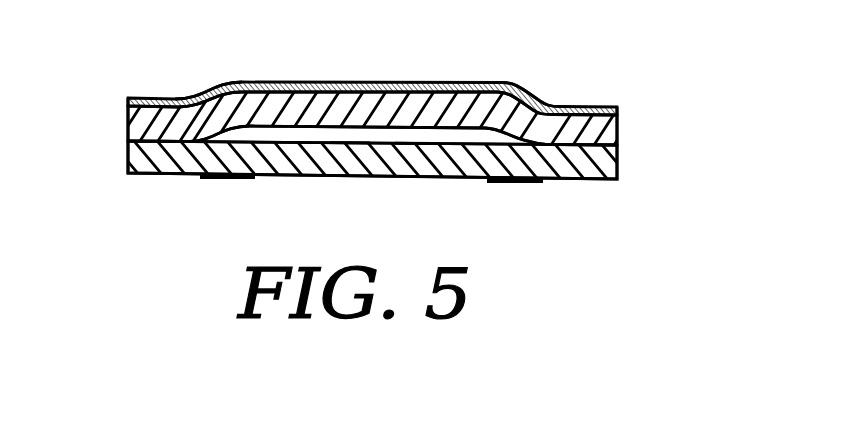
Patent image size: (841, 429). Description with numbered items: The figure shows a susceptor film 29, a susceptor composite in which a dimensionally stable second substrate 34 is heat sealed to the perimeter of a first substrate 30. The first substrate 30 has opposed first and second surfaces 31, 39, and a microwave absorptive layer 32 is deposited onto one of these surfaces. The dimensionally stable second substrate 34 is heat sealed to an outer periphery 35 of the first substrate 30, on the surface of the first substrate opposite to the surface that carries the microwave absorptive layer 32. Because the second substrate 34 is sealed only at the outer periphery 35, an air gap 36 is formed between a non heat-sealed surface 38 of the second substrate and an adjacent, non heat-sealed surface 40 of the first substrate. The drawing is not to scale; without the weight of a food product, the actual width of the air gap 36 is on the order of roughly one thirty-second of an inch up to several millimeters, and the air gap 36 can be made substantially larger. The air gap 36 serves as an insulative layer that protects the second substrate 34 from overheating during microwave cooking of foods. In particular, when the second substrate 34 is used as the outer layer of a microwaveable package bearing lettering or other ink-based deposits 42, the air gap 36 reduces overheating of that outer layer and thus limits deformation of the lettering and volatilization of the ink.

The susceptor film 29 is at (622, 40).
The first substrate 30 is at (620, 133).
The first surface 31 is at (304, 99).
The microwave absorptive layer 32 is at (539, 100).
The dimensionally stable second substrate 34 is at (157, 175).
The outer periphery 35 is at (129, 146).
The air gap 36 is at (415, 140).
The non heat-sealed surface of the second substrate 38 is at (349, 142).
The second surface 39 is at (179, 98).
The non heat-sealed surface of the first substrate 40 is at (374, 126).
The ink-based deposits 42 is at (222, 180).